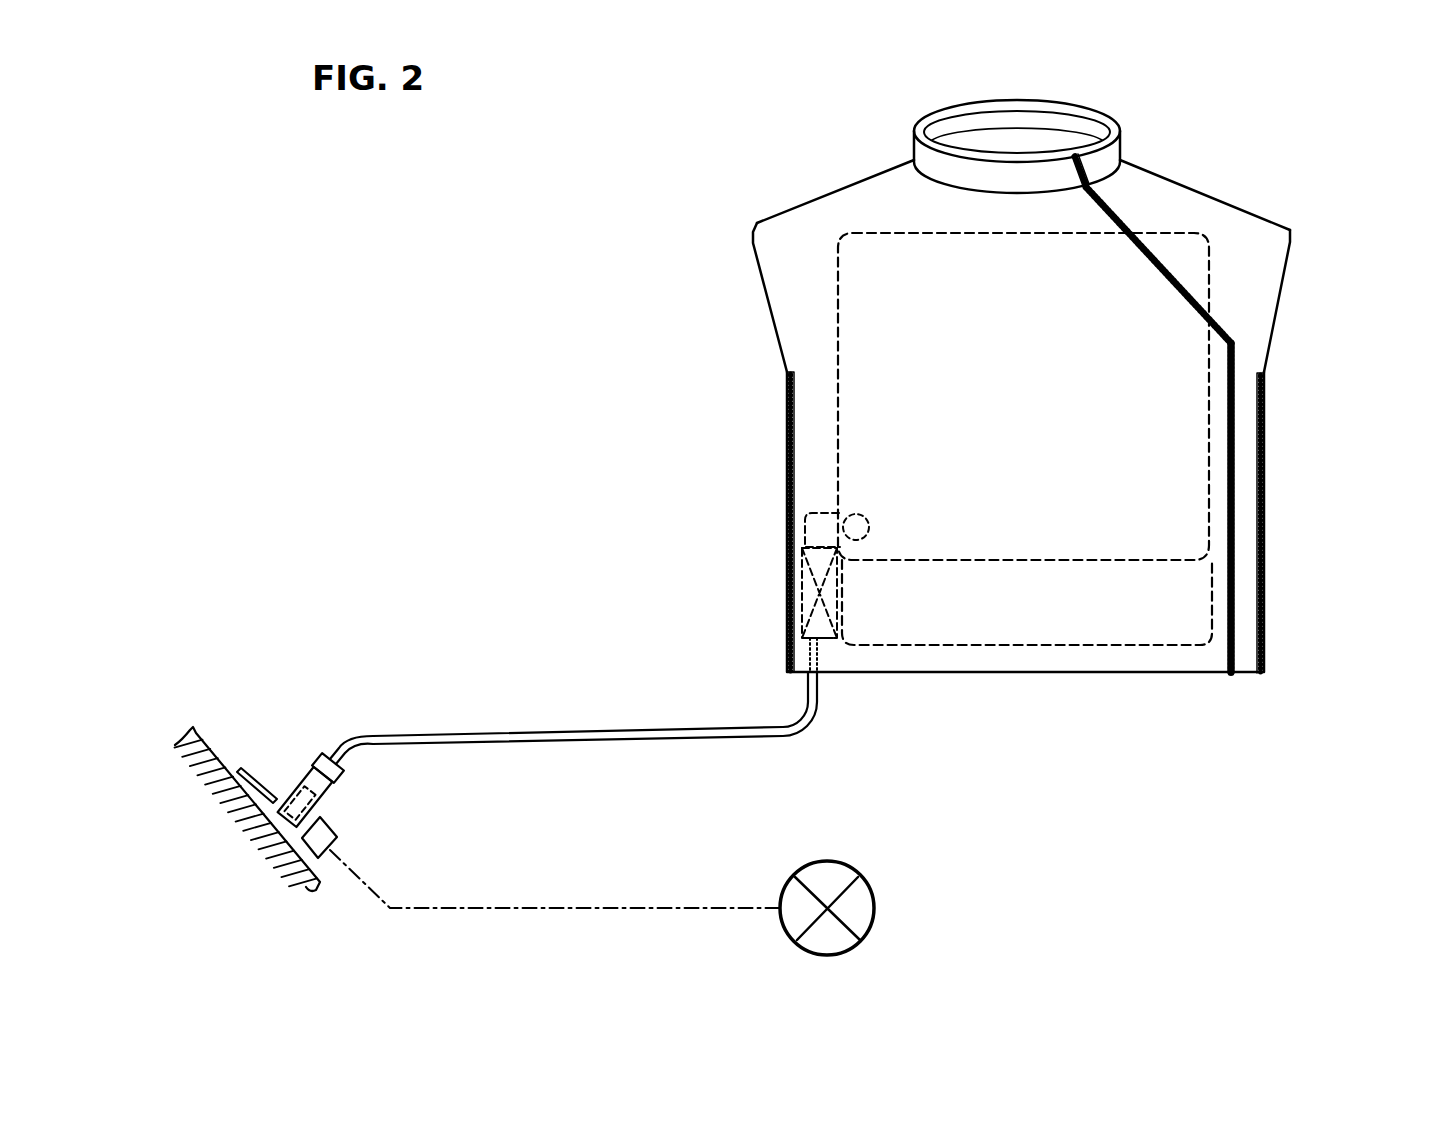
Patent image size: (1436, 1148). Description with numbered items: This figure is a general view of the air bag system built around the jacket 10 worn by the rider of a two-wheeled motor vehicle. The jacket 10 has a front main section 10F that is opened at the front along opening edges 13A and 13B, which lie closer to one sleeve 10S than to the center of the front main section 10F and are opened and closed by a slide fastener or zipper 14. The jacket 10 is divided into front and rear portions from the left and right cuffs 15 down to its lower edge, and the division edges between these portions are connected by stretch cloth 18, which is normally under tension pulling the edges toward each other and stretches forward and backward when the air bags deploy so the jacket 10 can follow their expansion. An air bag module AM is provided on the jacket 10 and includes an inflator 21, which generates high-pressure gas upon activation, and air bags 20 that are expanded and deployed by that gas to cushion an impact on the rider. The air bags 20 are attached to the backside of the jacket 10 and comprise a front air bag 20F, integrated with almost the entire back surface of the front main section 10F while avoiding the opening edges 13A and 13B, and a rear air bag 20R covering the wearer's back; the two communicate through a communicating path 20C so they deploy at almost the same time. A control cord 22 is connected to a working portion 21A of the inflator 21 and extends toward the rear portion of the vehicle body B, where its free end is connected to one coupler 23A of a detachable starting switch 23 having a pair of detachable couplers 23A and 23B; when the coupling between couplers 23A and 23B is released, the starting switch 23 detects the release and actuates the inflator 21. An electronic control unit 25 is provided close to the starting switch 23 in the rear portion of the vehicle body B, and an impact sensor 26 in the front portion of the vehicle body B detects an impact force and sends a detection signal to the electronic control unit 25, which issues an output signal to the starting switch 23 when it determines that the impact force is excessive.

The jacket 10 is at (812, 200).
The sleeve 10S is at (762, 228).
The cuff 15 is at (755, 240).
The stretch cloth 18 is at (787, 475).
The slide fastener 14 is at (1233, 338).
The opening edge 13A is at (1228, 467).
The opening edge 13B is at (1235, 483).
The front main section 10F is at (1047, 444).
The air bag 20 is at (1027, 675).
The rear air bag 20R is at (917, 560).
The front air bag 20F is at (1027, 645).
The communicating path 20C is at (868, 522).
The air bag module AM is at (1073, 740).
The inflator 21 is at (827, 673).
The working portion 21A is at (793, 645).
The control cord 22 is at (540, 733).
The detachable starting switch 23 is at (430, 632).
The coupler 23A is at (333, 757).
The coupler 23B is at (297, 775).
The electronic control unit 25 is at (337, 835).
The impact sensor 26 is at (865, 910).
The vehicle body B is at (213, 740).